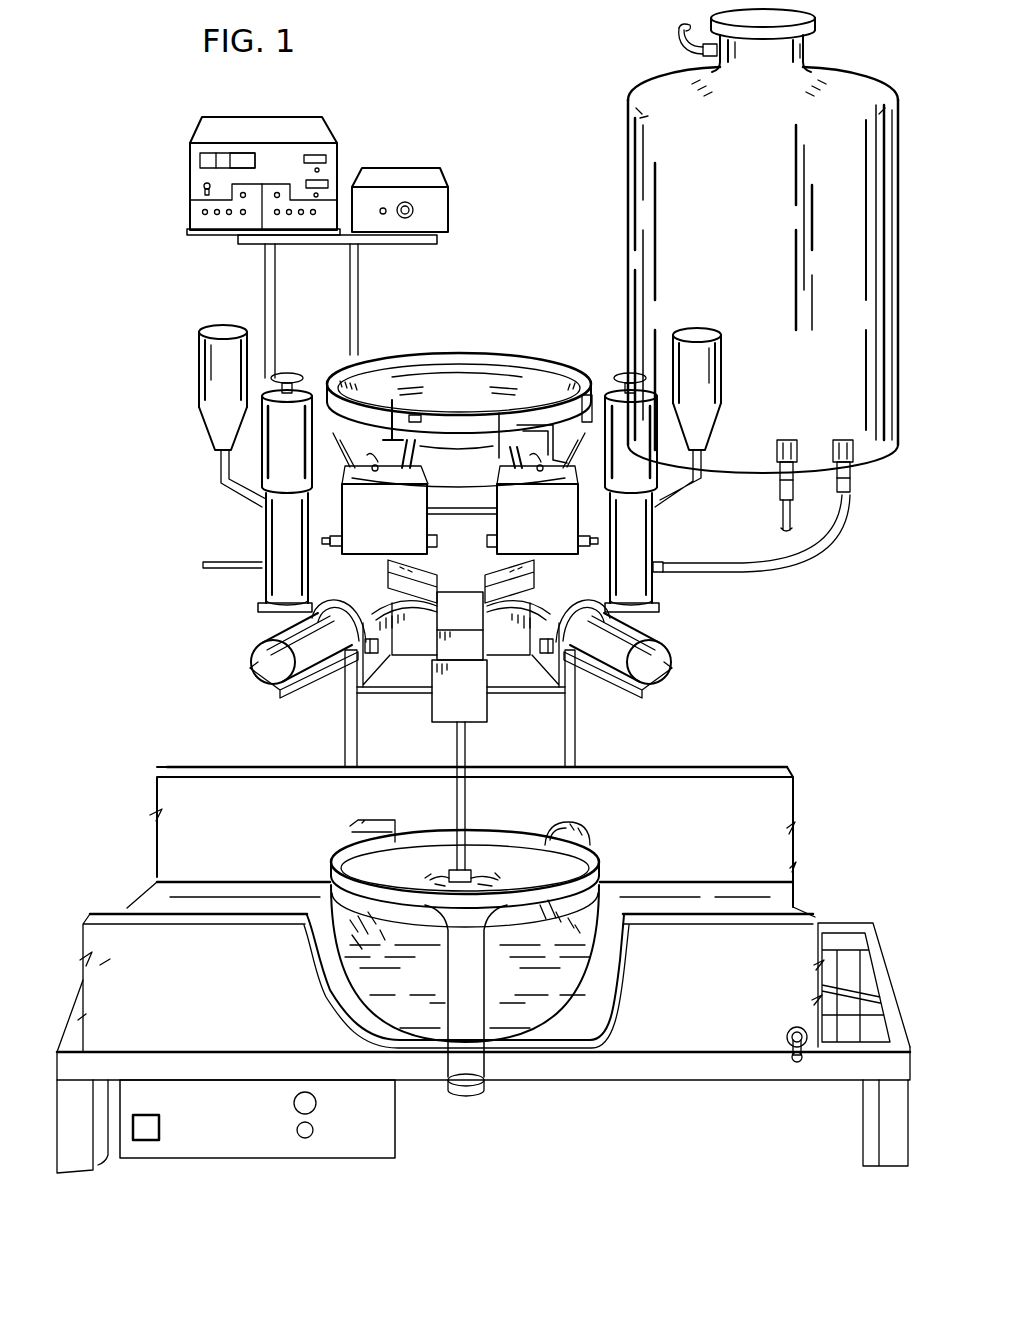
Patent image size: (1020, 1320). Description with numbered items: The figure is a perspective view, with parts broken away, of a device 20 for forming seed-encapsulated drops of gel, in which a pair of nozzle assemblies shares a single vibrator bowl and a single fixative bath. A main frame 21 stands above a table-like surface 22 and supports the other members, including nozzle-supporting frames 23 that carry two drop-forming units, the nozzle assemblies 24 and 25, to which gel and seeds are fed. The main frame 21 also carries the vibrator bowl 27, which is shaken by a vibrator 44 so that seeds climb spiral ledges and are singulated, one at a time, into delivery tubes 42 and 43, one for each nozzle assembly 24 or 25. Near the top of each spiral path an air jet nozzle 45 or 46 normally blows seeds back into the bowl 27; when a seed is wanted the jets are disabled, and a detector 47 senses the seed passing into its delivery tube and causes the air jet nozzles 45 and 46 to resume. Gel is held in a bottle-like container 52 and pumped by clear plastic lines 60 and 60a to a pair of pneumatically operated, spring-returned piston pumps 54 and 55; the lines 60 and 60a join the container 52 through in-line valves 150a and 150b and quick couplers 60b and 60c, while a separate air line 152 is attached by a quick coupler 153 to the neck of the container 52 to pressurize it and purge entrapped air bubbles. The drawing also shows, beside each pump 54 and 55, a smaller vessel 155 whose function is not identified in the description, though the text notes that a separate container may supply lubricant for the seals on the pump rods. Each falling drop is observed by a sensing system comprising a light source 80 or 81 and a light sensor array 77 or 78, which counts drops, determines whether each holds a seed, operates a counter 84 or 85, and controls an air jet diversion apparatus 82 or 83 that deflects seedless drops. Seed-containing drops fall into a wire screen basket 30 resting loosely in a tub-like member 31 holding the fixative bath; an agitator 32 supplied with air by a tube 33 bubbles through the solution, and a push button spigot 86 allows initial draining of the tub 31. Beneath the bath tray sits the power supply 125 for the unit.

The device 20 is at (527, 214).
The main frame 21 is at (343, 690).
The table-like surface 22 is at (205, 1072).
The nozzle-supporting frames 23 is at (258, 607).
The nozzle assembly 24 is at (390, 523).
The nozzle assembly 25 is at (545, 523).
The vibrator bowl 27 is at (457, 350).
The basket 30 is at (499, 942).
The tub-like member 31 is at (660, 992).
The agitator 32 is at (440, 870).
The tube 33 is at (470, 796).
The delivery tube 42 is at (420, 462).
The delivery tube 43 is at (506, 463).
The vibrator 44 is at (462, 516).
The air jet nozzle 45 is at (392, 410).
The air jet nozzle 46 is at (502, 413).
The detector 47 is at (419, 423).
The container 52 is at (748, 170).
The piston pump 54 is at (310, 392).
The piston pump 55 is at (602, 392).
The plastic line 60 is at (778, 562).
The plastic line 60a is at (236, 560).
The quick coupler 60b is at (782, 439).
The quick coupler 60c is at (850, 439).
The light sensor array 77 is at (262, 640).
The light sensor array 78 is at (655, 660).
The light source 80 is at (388, 568).
The light source 81 is at (530, 568).
The air jet diversion apparatus 82 is at (380, 655).
The air jet diversion apparatus 83 is at (540, 655).
The counter 84 is at (205, 165).
The counter 85 is at (241, 160).
The push button spigot 86 is at (789, 1028).
The power supply 125 is at (385, 1122).
The in-line valve 150a is at (851, 476).
The in-line valve 150b is at (779, 482).
The air line 152 is at (688, 25).
The quick coupler 153 is at (702, 51).
The supply bottle 155 is at (200, 382).